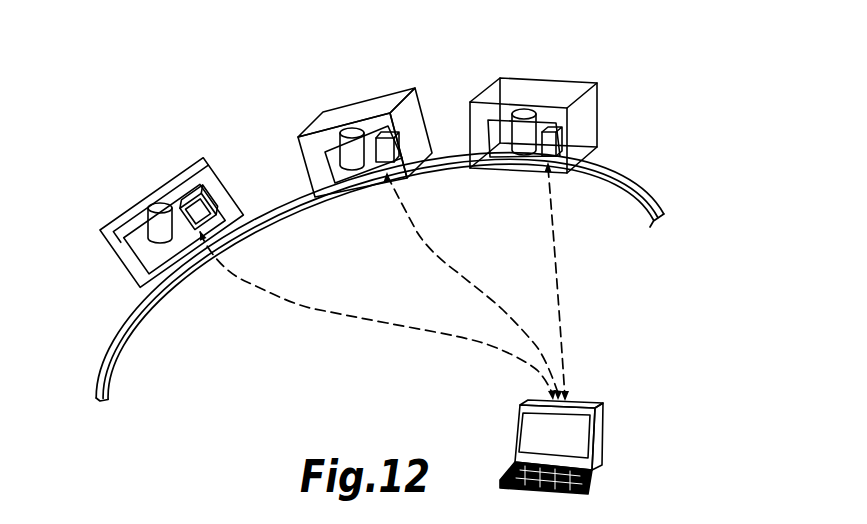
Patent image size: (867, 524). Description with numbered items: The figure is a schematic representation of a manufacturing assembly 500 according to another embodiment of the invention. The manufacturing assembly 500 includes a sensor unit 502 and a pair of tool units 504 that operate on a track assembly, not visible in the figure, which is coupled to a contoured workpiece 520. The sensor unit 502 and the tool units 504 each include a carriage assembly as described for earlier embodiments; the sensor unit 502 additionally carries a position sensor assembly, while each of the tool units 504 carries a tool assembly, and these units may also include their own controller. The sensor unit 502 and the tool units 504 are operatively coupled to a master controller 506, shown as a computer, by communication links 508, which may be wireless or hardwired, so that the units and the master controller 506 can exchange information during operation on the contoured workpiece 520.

The manufacturing assembly 500 is at (123, 86).
The sensor unit 502 is at (112, 220).
The tool units 504 is at (343, 111).
The master controller 506 is at (598, 420).
The communication links 508 is at (303, 309).
The contoured workpiece 520 is at (667, 203).